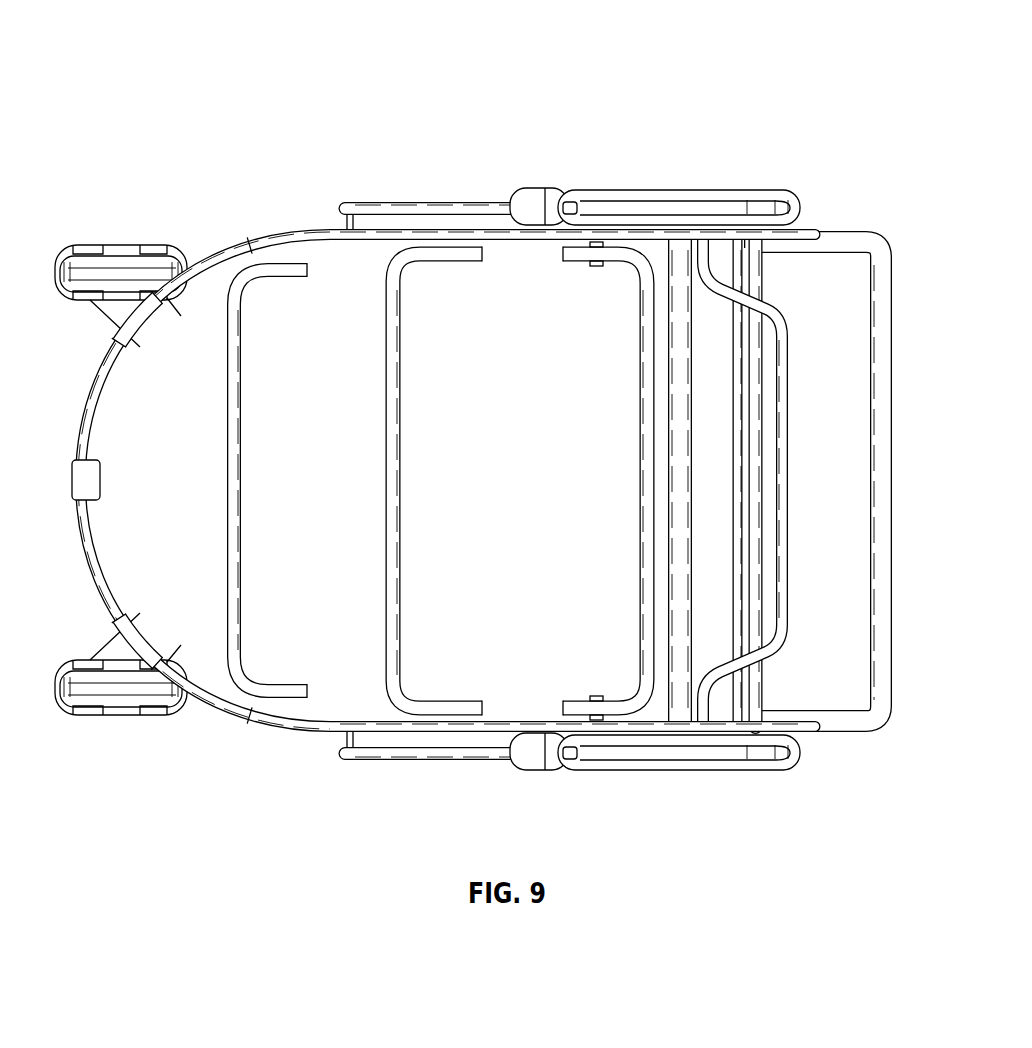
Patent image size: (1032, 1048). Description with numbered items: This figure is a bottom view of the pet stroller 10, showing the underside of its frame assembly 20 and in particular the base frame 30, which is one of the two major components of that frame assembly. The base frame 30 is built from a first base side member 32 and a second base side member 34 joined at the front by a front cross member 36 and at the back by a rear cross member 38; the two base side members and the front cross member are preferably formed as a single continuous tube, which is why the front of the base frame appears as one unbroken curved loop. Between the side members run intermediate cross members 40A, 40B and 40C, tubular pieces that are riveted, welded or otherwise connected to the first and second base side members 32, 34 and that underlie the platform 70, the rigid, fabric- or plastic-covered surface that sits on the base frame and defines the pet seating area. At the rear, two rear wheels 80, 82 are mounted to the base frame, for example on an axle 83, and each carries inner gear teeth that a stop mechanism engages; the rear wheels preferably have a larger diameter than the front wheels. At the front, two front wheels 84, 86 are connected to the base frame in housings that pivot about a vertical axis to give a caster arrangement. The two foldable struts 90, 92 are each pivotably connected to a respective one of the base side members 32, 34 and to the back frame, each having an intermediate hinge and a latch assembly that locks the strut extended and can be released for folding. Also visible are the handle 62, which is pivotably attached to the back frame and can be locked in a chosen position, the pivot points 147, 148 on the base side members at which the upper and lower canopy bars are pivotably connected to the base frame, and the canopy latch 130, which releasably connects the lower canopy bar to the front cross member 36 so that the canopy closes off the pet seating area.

The pet stroller 10 is at (474, 428).
The frame assembly 20 is at (545, 162).
The base frame 30 is at (456, 746).
The first base side member 32 is at (378, 732).
The second base side member 34 is at (393, 230).
The front cross member 36 is at (100, 384).
The rear cross member 38 is at (762, 600).
The intermediate cross member 40A is at (246, 326).
The intermediate cross member 40B is at (402, 332).
The intermediate cross member 40C is at (640, 628).
The handle 62 is at (893, 498).
The platform 70 is at (299, 498).
The rear wheel 80 is at (760, 773).
The rear wheel 82 is at (768, 190).
The axle 83 is at (682, 394).
The front wheel 84 is at (120, 707).
The front wheel 86 is at (120, 250).
The foldable strut 90 is at (395, 762).
The foldable strut 92 is at (463, 200).
The canopy latch 130 is at (70, 505).
The pivot point 147 is at (597, 733).
The pivot point 148 is at (600, 236).